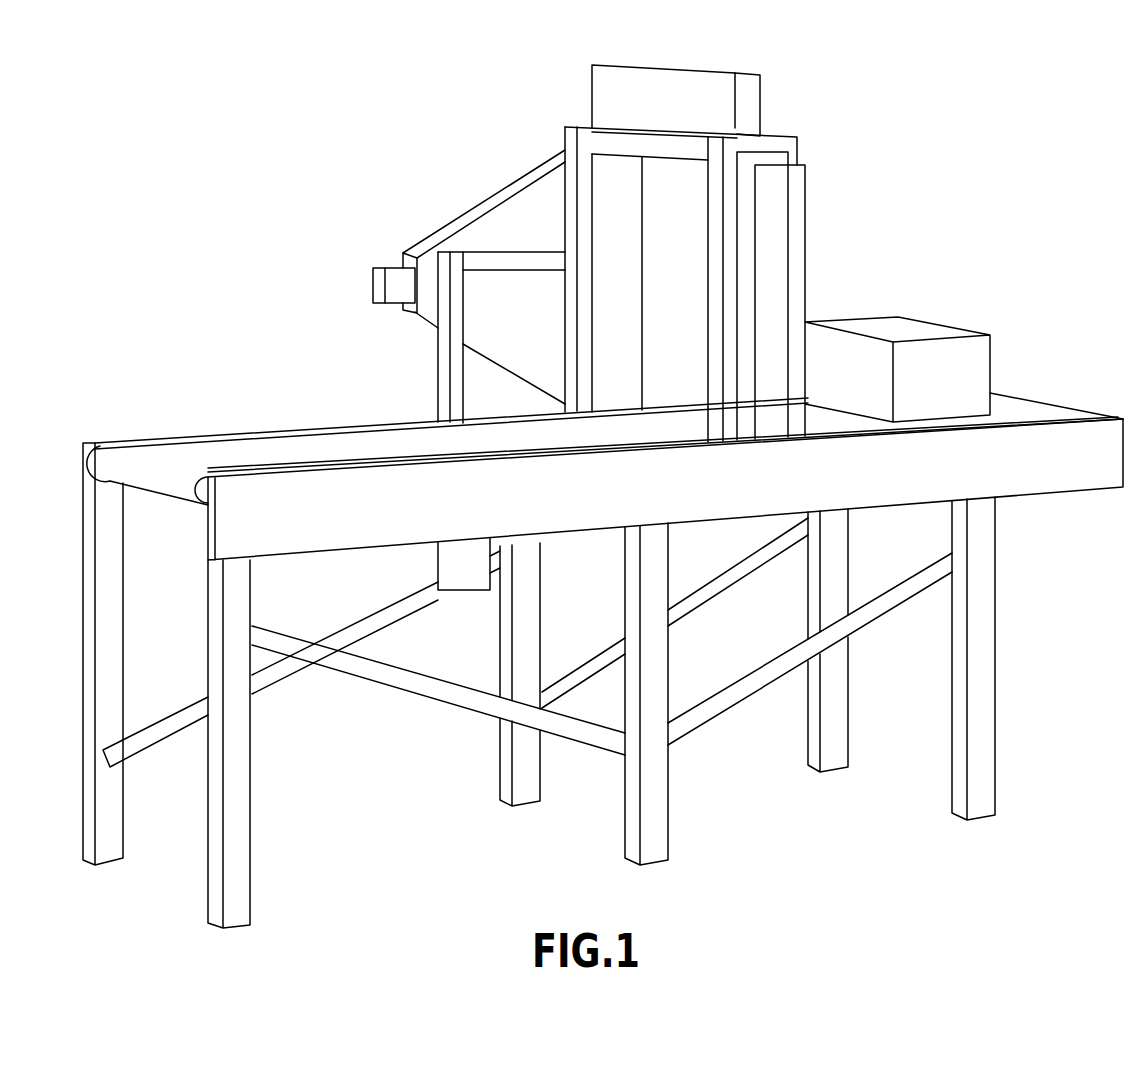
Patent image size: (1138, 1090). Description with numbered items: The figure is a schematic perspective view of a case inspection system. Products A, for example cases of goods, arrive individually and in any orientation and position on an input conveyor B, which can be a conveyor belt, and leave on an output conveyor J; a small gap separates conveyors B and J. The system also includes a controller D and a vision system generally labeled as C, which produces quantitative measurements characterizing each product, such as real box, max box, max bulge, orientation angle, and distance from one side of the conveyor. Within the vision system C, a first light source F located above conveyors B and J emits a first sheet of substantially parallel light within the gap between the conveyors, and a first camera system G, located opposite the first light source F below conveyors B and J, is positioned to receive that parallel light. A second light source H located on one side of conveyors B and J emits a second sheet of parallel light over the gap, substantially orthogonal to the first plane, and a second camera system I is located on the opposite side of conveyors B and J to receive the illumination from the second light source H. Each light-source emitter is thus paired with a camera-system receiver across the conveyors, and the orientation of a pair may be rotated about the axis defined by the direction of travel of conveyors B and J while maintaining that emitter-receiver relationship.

The products A is at (913, 328).
The input conveyor B is at (1015, 410).
The vision system C is at (764, 92).
The controller D is at (372, 282).
The first light source F is at (592, 95).
The first camera system G is at (460, 583).
The second light source H is at (798, 195).
The second camera system I is at (439, 229).
The output conveyor J is at (345, 442).